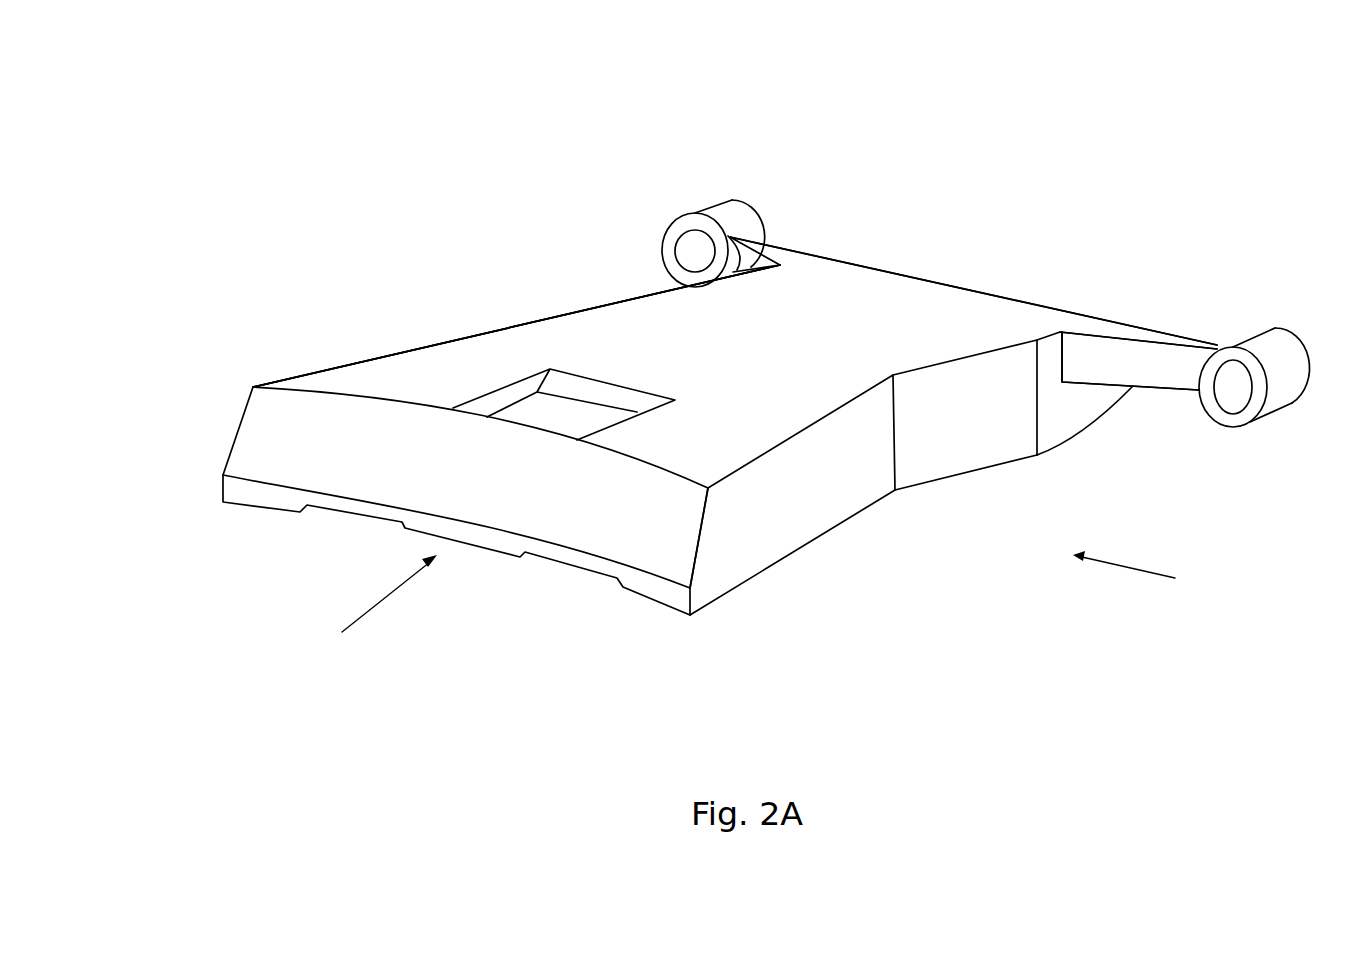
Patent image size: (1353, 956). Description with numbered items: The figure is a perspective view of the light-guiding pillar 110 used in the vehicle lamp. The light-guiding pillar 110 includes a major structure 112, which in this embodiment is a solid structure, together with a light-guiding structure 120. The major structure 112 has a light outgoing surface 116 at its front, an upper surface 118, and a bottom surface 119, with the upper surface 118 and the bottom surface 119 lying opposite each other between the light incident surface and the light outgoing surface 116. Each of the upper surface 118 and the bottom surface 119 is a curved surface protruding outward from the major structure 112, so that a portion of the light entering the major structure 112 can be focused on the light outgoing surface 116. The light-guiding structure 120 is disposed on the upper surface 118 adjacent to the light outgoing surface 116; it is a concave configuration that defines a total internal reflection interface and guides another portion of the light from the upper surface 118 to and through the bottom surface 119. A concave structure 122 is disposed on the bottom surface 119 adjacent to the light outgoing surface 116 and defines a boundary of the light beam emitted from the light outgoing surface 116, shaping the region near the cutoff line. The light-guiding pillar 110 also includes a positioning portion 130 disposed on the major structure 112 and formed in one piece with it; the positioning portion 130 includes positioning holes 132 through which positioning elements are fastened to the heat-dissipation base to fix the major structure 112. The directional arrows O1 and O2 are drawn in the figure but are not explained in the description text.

The light-guiding pillar 110 is at (113, 80).
The major structure 112 is at (847, 308).
The light outgoing surface 116 is at (263, 437).
The upper surface 118 is at (417, 373).
The bottom surface 119 is at (867, 510).
The light-guiding structure 120 is at (533, 410).
The concave structure 122 is at (570, 565).
The positioning portion 130 is at (1170, 332).
The positioning hole 132 is at (1263, 420).
The first direction O1 is at (377, 605).
The second direction O2 is at (1125, 568).